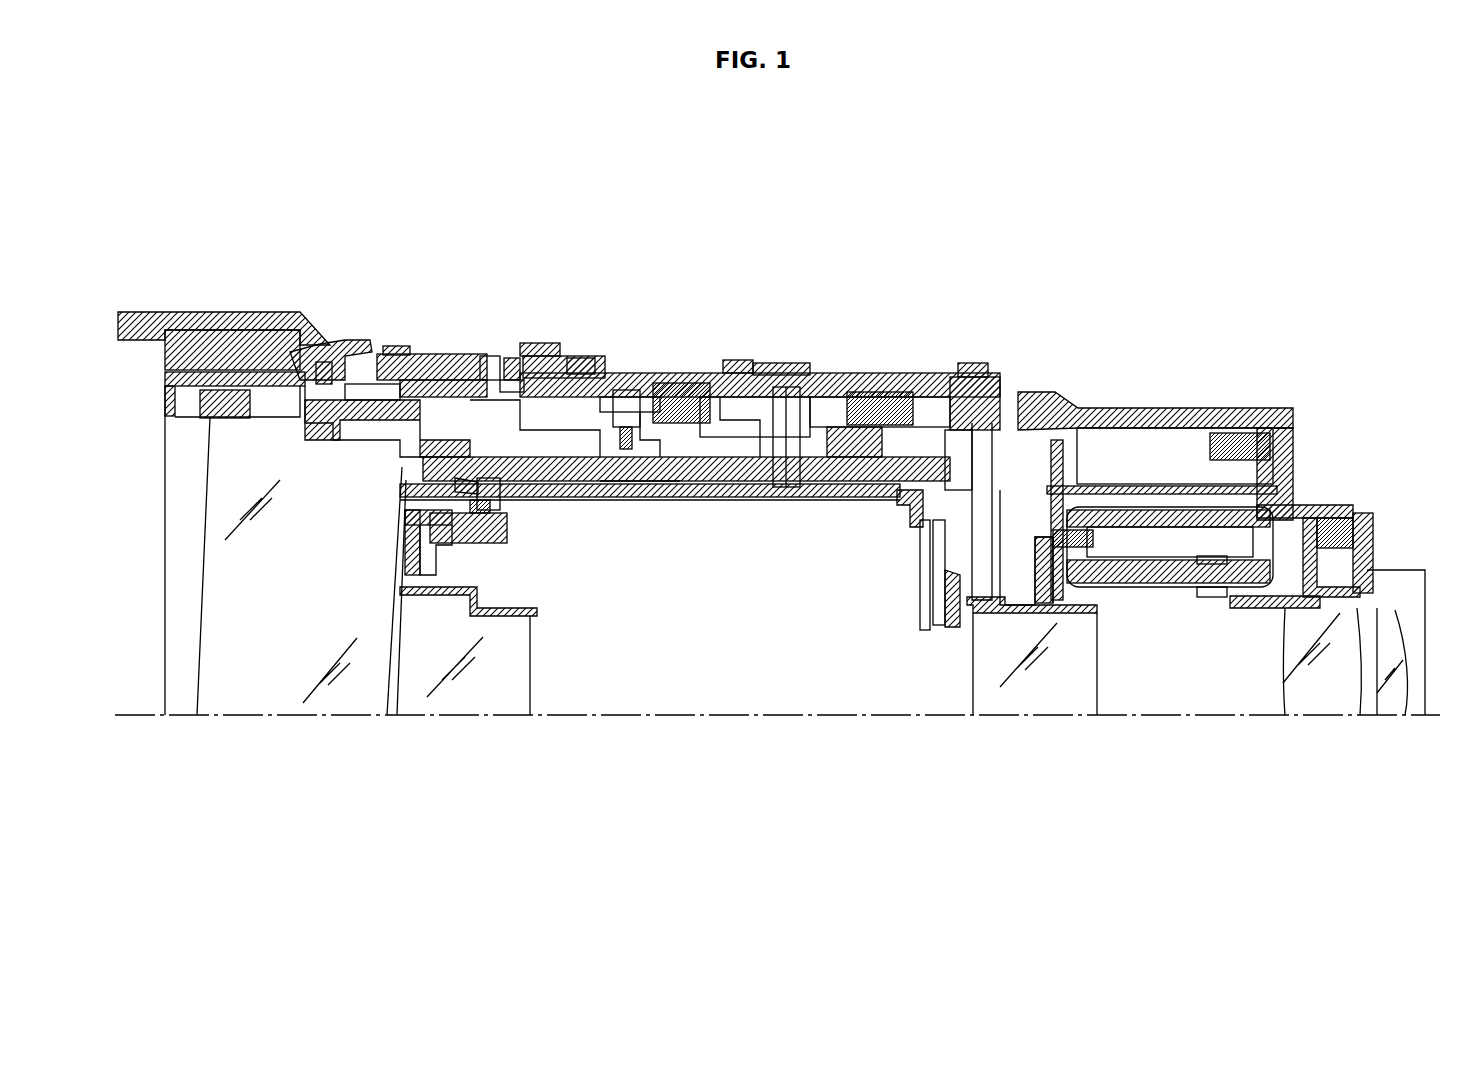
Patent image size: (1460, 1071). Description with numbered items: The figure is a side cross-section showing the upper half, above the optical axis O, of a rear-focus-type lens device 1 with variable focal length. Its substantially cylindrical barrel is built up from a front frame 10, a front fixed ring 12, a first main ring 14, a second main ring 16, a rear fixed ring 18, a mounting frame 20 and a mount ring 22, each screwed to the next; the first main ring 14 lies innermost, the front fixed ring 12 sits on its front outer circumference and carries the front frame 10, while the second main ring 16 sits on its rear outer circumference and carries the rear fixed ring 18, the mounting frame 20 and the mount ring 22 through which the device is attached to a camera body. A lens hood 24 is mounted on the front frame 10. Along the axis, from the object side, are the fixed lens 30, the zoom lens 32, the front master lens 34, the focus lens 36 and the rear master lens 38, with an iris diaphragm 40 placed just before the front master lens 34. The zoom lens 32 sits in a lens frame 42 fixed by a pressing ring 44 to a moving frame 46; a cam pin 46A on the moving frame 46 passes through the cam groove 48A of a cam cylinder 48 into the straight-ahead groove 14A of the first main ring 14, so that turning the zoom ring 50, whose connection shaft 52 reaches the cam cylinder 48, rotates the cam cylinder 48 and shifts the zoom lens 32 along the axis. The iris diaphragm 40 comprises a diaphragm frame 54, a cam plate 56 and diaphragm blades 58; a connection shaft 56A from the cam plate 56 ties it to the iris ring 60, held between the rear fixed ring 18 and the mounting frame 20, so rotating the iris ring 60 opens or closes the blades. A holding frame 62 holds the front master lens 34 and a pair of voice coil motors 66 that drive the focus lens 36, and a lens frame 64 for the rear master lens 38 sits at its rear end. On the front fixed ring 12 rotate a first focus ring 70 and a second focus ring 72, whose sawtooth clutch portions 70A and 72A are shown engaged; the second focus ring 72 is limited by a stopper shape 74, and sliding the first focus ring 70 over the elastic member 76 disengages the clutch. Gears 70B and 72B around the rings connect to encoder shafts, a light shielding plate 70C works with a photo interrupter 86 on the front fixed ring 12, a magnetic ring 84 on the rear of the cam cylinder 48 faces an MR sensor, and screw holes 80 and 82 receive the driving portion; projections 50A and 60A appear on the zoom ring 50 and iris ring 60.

The lens device 1 is at (955, 172).
The optical axis O is at (143, 720).
The front frame 10 is at (325, 336).
The front fixed ring 12 is at (605, 484).
The first main ring 14 is at (701, 497).
The straight-ahead groove 14A is at (635, 498).
The second main ring 16 is at (713, 372).
The rear fixed ring 18 is at (895, 372).
The mounting frame 20 is at (1126, 410).
The mount ring 22 is at (1320, 500).
The lens hood 24 is at (168, 322).
The fixed lens 30 is at (263, 694).
The zoom lens 32 is at (463, 694).
The front master lens 34 is at (1040, 688).
The focus lens 36 is at (1307, 682).
The rear master lens 38 is at (1390, 700).
The iris diaphragm 40 is at (913, 621).
The lens frame 42 is at (477, 597).
The pressing ring 44 is at (404, 528).
The moving frame 46 is at (508, 518).
The cam pin 46A is at (478, 488).
The cam cylinder 48 is at (753, 497).
The cam groove 48A is at (505, 500).
The zoom ring 50 is at (793, 362).
The zoom ring projection 50A is at (750, 360).
The connection shaft 52 is at (828, 372).
The diaphragm frame 54 is at (920, 590).
The cam plate 56 is at (950, 628).
The connection shaft 56A is at (990, 525).
The diaphragm blades 58 is at (937, 630).
The iris ring 60 is at (1000, 375).
The iris ring projection 60A is at (970, 363).
The holding frame 62 is at (1143, 487).
The lens frame 64 is at (1322, 568).
The voice coil motor 66 is at (1207, 610).
The first focus ring 70 is at (453, 352).
The clutch portion 70A is at (512, 358).
The gear 70B is at (545, 343).
The light shielding plate 70C is at (395, 347).
The second focus ring 72 is at (578, 354).
The clutch portion 72A is at (512, 380).
The gear 72B is at (588, 358).
The stopper shape 74 is at (640, 390).
The elastic member for clicking 76 is at (490, 355).
The screw hole 80 is at (693, 383).
The screw hole 82 is at (920, 387).
The magnetic ring 84 is at (900, 511).
The photo interrupter 86 is at (328, 362).